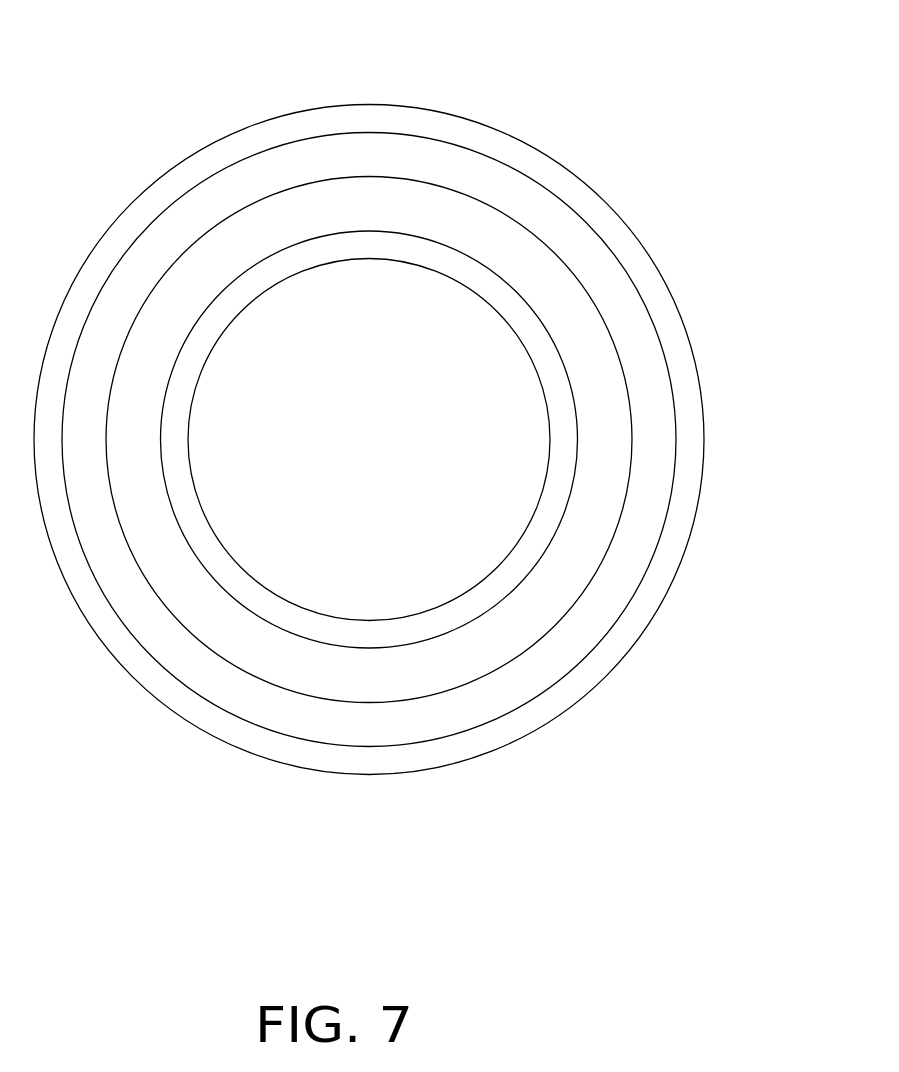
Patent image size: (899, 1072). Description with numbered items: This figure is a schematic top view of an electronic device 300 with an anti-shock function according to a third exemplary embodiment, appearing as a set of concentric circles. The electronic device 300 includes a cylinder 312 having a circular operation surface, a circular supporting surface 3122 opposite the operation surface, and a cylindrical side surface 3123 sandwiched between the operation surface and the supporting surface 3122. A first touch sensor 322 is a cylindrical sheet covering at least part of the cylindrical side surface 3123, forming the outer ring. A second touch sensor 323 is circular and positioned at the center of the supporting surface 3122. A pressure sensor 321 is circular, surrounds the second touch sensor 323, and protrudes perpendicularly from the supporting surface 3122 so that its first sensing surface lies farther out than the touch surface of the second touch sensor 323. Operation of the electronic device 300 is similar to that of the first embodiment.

The electronic device 300 is at (405, 444).
The outer ring 312 is at (424, 388).
The circular supporting surface 3122 is at (370, 158).
The cylindrical side surface 3123 is at (632, 603).
The first touch sensor 322 is at (662, 328).
The pressure sensor 321 is at (532, 615).
The second touch sensor 323 is at (339, 580).